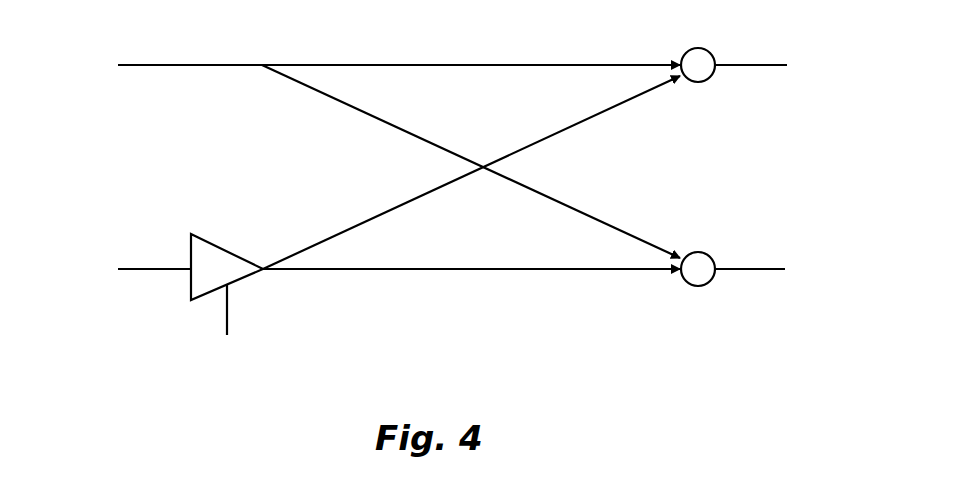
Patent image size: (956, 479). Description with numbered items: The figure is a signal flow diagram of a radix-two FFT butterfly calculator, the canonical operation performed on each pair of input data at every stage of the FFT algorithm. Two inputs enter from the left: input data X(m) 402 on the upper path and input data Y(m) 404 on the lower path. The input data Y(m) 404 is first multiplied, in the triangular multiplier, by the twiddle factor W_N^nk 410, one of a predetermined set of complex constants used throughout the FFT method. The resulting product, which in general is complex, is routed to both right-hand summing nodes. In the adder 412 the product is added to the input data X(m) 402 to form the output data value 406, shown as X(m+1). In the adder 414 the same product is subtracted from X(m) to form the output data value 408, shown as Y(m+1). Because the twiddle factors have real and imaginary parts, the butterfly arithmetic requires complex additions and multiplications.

The input data X(m) 402 is at (225, 66).
The input data Y(m) 404 is at (155, 270).
The output data value 406 is at (757, 67).
The output data value 408 is at (735, 271).
The twiddle factor W_N^nk 410 is at (228, 316).
The adder 412 is at (699, 83).
The adder 414 is at (698, 287).